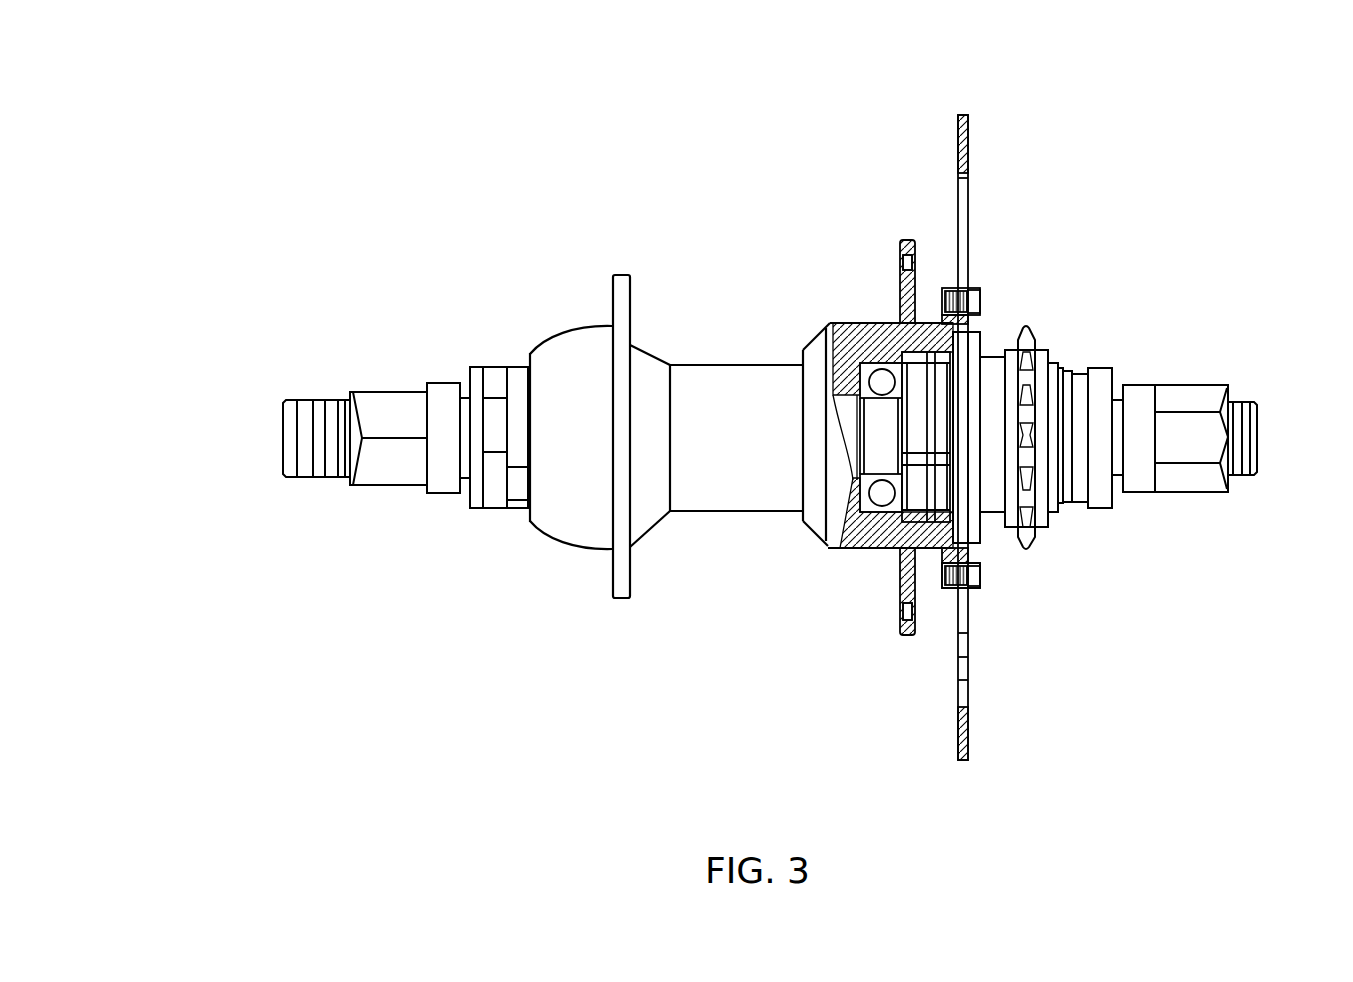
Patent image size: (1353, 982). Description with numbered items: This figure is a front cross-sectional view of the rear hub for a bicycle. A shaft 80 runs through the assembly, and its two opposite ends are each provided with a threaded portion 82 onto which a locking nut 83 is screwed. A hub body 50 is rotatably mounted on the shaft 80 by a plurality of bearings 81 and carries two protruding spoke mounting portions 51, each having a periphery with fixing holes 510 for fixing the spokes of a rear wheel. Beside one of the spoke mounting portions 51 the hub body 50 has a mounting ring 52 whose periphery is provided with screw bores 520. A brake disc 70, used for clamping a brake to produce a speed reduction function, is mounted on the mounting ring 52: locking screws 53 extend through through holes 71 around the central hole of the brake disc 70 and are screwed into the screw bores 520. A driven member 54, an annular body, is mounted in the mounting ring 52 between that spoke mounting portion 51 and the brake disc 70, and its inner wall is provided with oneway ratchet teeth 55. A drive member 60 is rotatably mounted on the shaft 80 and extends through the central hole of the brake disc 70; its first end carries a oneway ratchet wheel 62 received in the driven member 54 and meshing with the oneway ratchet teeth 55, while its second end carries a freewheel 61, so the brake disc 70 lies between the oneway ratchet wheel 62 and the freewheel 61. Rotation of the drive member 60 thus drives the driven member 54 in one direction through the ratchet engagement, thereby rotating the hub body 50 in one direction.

The hub body 50 is at (695, 356).
The spoke mounting portion 51 is at (610, 300).
The fixing hole 510 is at (902, 262).
The mounting ring 52 is at (974, 327).
The locking screw 53 is at (1007, 354).
The screw bore 520 is at (957, 290).
The through hole 71 is at (964, 287).
The driven member 54 is at (933, 560).
The oneway ratchet teeth 55 is at (930, 483).
The oneway ratchet wheel 62 is at (998, 519).
The drive member 60 is at (1060, 516).
The freewheel 61 is at (1030, 333).
The brake disc 70 is at (976, 143).
The shaft 80 is at (318, 488).
The bearing 81 is at (877, 553).
The threaded portion 82 is at (305, 435).
The locking nut 83 is at (390, 410).